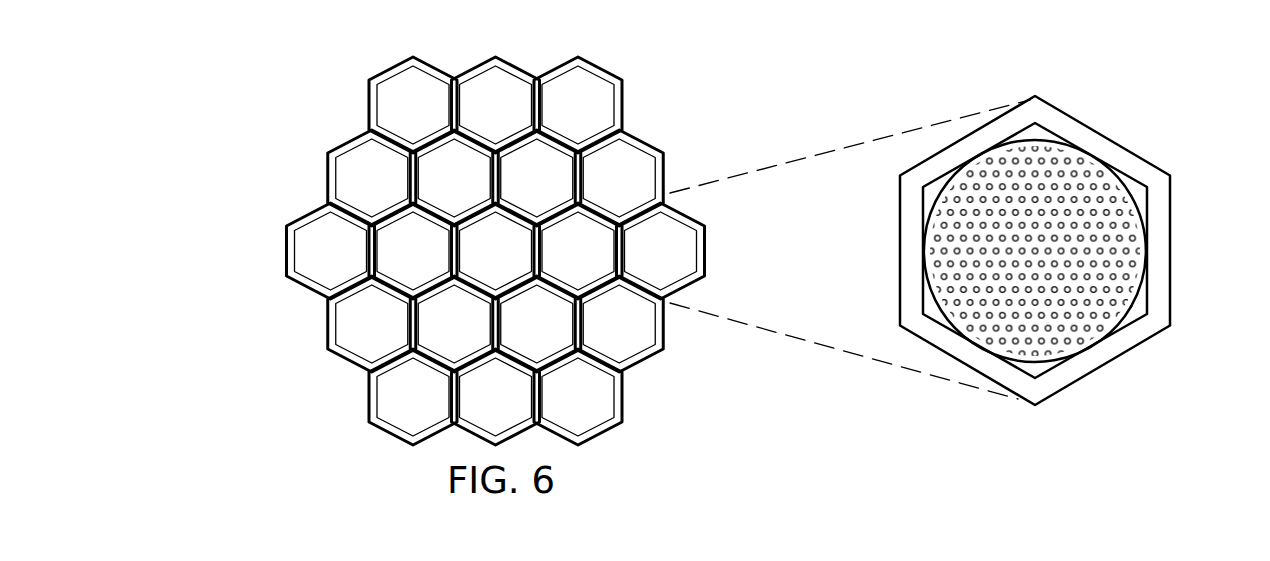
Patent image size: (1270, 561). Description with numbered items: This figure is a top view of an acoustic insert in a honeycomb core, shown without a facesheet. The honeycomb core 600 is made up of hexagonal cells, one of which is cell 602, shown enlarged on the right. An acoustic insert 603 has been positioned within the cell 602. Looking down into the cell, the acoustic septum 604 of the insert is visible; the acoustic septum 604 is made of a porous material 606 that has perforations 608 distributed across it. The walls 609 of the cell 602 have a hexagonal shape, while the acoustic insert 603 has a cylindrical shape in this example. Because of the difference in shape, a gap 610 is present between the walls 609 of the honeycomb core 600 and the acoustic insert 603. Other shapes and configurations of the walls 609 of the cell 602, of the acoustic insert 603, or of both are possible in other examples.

The honeycomb core 600 is at (398, 90).
The cell 602 is at (683, 250).
The acoustic insert 603 is at (1122, 167).
The acoustic septum 604 is at (1037, 138).
The porous material 606 is at (923, 263).
The perforations 608 is at (1152, 258).
The walls 609 is at (1148, 210).
The gap 610 is at (1149, 301).